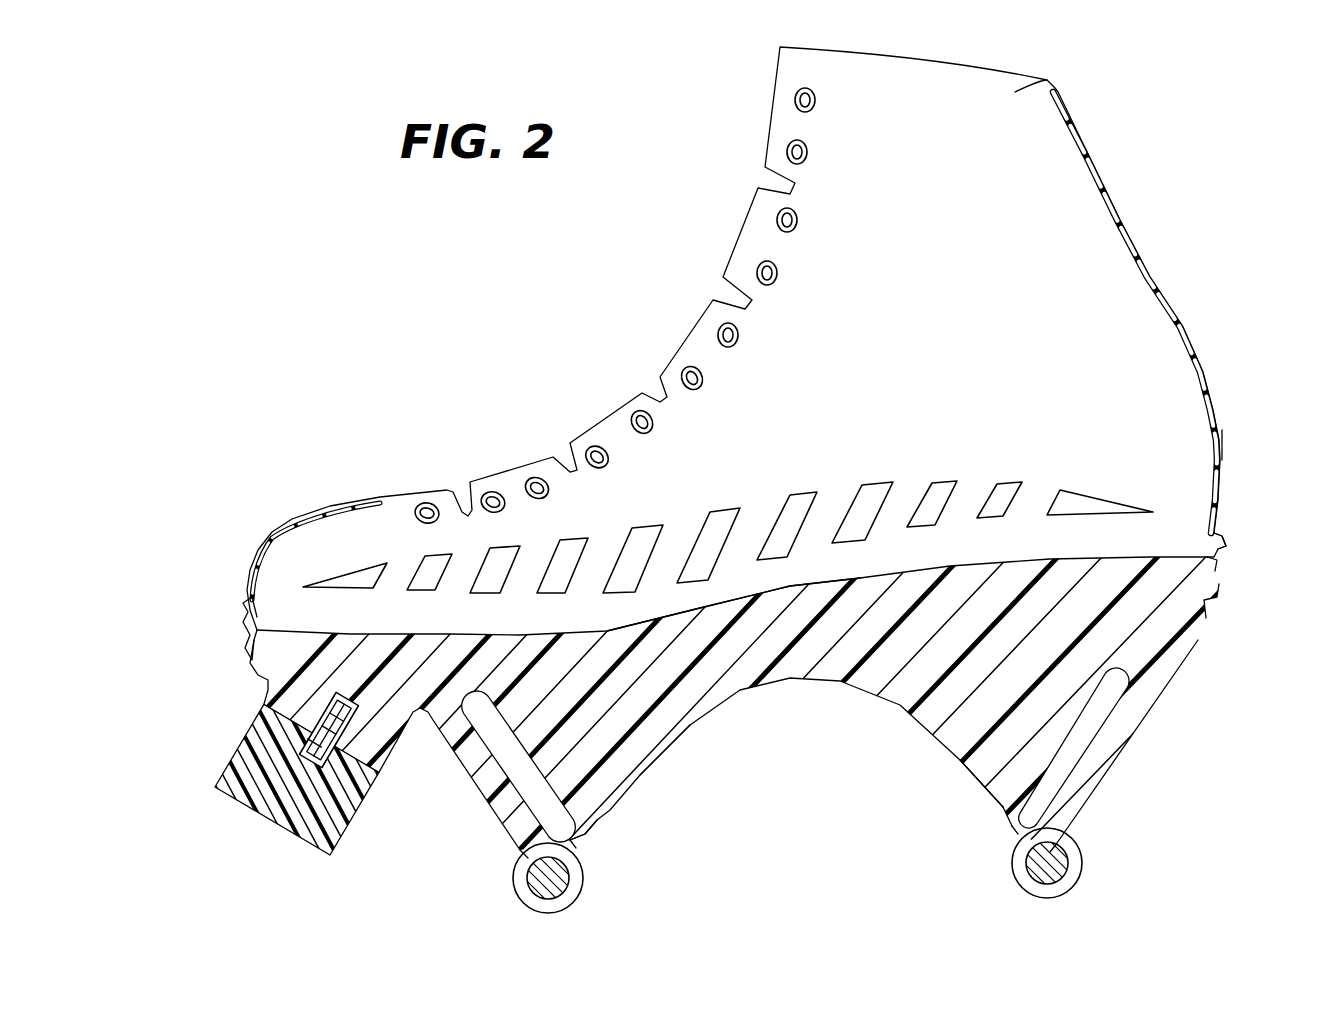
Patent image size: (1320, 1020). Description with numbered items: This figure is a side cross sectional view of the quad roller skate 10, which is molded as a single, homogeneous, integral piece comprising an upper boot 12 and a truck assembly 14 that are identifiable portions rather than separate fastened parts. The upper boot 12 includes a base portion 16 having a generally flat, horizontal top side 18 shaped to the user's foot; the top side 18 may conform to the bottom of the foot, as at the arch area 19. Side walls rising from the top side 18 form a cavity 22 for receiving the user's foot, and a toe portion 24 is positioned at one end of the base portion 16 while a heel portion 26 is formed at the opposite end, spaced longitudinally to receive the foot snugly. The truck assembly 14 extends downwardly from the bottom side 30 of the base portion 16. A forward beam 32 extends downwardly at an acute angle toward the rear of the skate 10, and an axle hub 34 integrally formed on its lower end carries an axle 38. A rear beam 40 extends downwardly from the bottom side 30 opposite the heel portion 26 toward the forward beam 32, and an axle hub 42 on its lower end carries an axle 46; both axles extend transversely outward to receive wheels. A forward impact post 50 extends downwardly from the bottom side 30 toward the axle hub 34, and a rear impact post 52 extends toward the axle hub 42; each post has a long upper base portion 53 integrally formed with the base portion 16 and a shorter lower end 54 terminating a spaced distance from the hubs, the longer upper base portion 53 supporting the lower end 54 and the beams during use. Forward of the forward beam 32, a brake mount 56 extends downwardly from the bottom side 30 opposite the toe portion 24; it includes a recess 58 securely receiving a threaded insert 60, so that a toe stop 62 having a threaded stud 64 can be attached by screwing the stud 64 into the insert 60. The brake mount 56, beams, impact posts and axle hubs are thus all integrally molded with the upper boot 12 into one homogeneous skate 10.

The quad roller skate 10 is at (1240, 362).
The upper boot 12 is at (1122, 215).
The truck assembly 14 is at (1205, 628).
The base portion 16 is at (1222, 560).
The top side 18 is at (1228, 537).
The arch area 19 is at (820, 598).
The cavity 22 is at (1040, 83).
The toe portion 24 is at (292, 520).
The heel portion 26 is at (1222, 445).
The bottom side 30 is at (1213, 615).
The forward beam 32 is at (470, 785).
The axle hub 34 is at (583, 870).
The axle 38 is at (535, 878).
The rear beam 40 is at (1145, 755).
The axle hub 42 is at (1082, 867).
The axle 46 is at (1035, 858).
The forward impact post 50 is at (625, 768).
The rear impact post 52 is at (968, 750).
The upper base portion 53 is at (675, 718).
The lower end 54 is at (595, 833).
The brake mount 56 is at (267, 680).
The recess 58 is at (317, 703).
The threaded insert 60 is at (370, 757).
The toe stop 62 is at (263, 822).
The threaded stud 64 is at (293, 740).